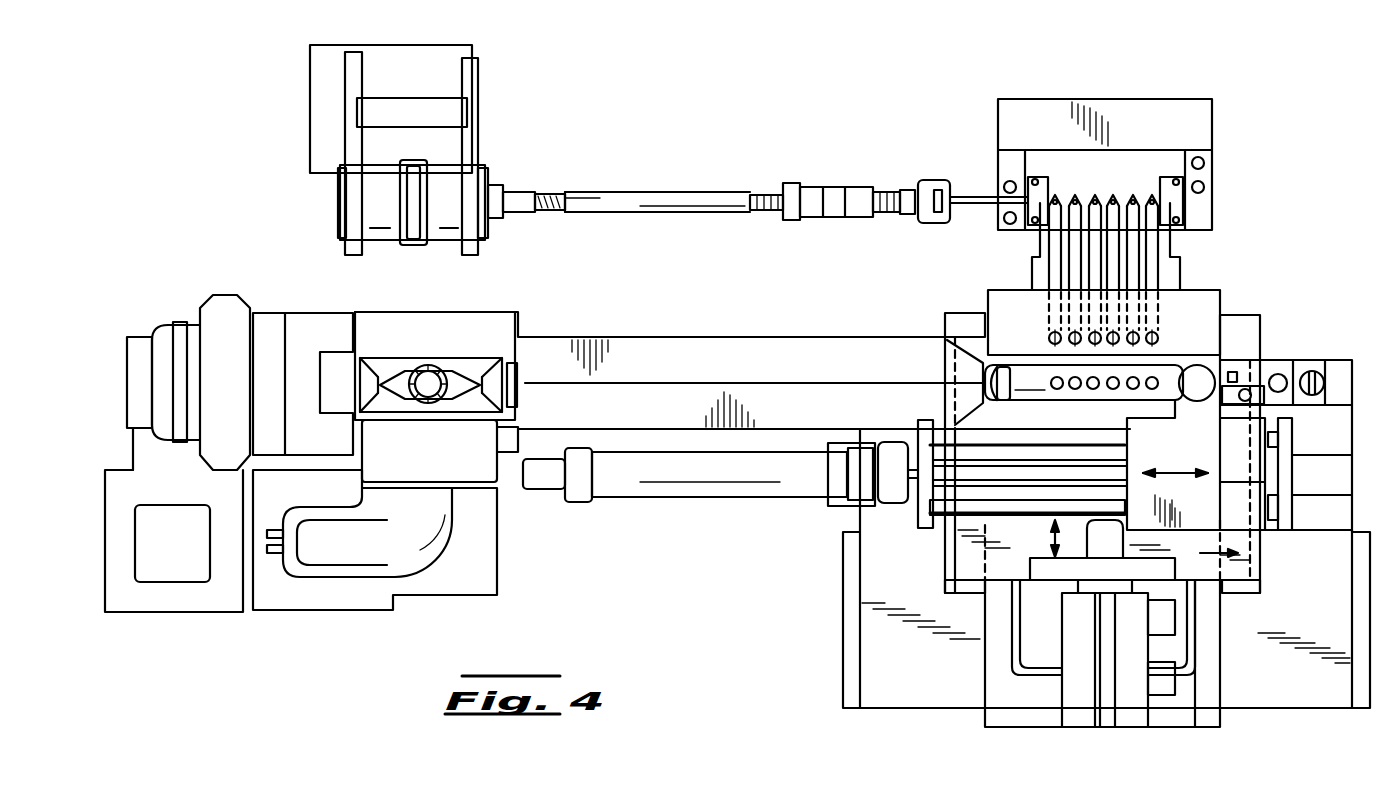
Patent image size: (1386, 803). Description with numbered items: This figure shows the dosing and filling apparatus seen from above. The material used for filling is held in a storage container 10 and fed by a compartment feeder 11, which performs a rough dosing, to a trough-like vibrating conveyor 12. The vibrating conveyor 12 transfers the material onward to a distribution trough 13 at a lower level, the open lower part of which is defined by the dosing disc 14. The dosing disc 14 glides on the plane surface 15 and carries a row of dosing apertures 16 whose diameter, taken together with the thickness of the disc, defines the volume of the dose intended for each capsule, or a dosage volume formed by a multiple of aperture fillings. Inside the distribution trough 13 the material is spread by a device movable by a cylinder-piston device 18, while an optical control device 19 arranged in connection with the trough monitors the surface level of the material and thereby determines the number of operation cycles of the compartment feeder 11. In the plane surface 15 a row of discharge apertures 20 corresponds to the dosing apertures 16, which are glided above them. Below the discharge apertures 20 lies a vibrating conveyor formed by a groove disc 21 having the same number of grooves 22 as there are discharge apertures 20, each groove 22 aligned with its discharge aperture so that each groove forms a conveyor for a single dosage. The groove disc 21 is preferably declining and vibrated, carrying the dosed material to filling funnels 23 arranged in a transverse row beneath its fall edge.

The storage container 10 is at (458, 360).
The compartment feeder 11 is at (472, 392).
The vibrating conveyor 12 is at (798, 362).
The distribution trough 13 is at (1060, 370).
The dosing disc 14 is at (983, 360).
The plane surface 15 is at (1215, 310).
The dosing apertures 16 is at (1133, 390).
The cylinder-piston device 18 is at (718, 476).
The optical control device 19 is at (1236, 373).
The discharge apertures 20 is at (1152, 333).
The groove disc 21 is at (1026, 243).
The grooves 22 is at (1152, 262).
The filling funnels 23 is at (1076, 199).